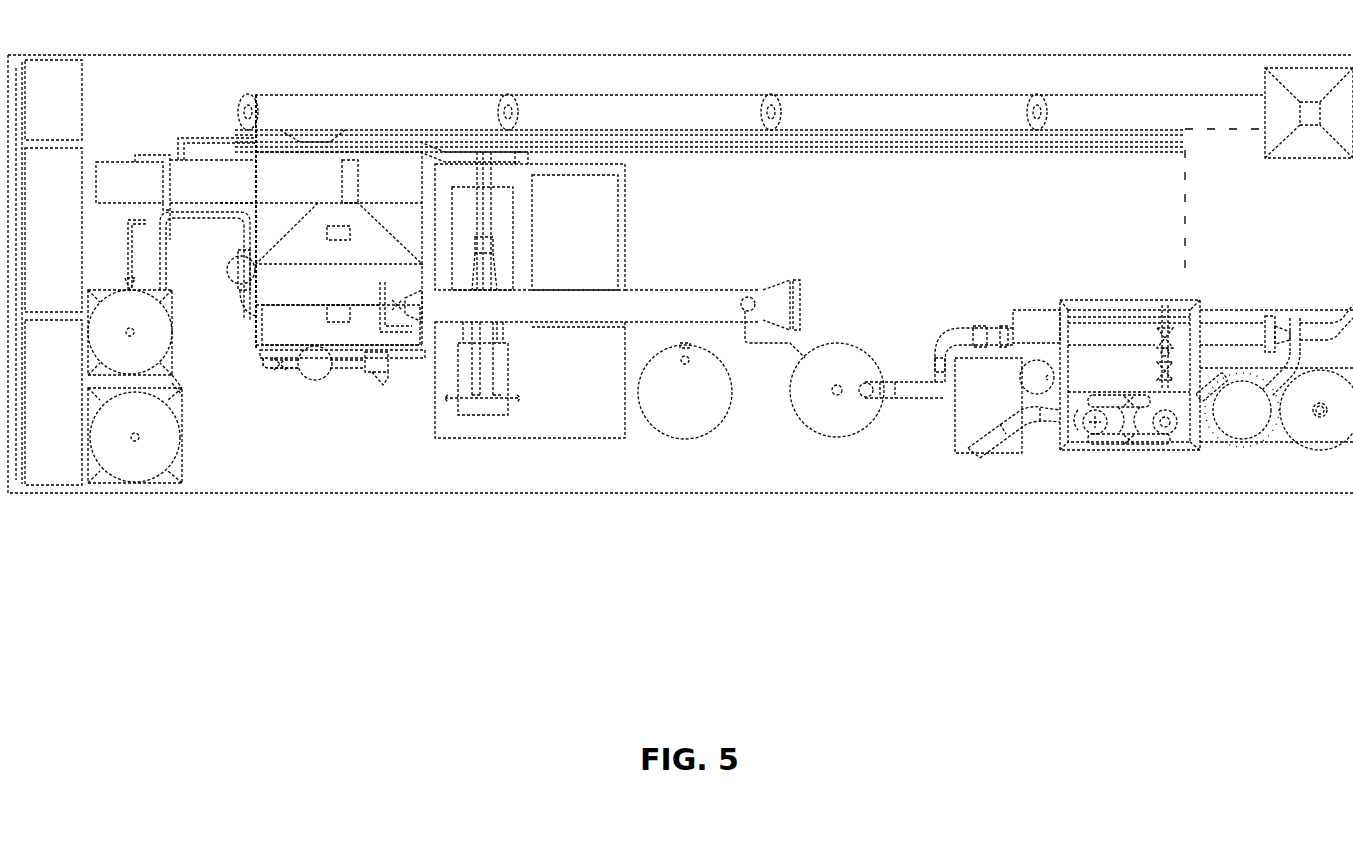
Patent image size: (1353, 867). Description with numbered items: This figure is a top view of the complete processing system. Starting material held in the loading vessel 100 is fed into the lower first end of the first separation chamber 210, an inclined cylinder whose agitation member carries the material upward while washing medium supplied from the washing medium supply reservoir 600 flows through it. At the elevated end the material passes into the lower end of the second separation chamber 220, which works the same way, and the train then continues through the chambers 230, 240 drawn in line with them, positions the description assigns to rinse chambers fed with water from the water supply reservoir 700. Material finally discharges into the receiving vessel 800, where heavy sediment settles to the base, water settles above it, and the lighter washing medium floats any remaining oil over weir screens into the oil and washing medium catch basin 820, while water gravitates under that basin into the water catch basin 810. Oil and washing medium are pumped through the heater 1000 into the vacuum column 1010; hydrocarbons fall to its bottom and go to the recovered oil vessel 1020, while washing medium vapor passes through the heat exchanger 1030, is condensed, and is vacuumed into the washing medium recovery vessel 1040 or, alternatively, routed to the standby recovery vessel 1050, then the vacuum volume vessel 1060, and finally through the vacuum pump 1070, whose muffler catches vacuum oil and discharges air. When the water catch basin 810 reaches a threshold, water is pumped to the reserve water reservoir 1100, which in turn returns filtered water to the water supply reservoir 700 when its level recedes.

The loading vessel 100 is at (1309, 113).
The first separation chamber 210 is at (1146, 187).
The second separation chamber 220 is at (905, 123).
The third conveyor section 230 is at (600, 129).
The fourth conveyor section 240 is at (377, 123).
The washing medium supply reservoir 600 is at (1316, 410).
The water supply reservoir 700 is at (130, 326).
The receiving vessel 800 is at (321, 222).
The water catch basin 810 is at (340, 345).
The oil and washing medium catch basin 820 is at (339, 305).
The heater 1000 is at (597, 295).
The vacuum column 1010 is at (882, 382).
The recovered oil vessel 1020 is at (721, 359).
The heat exchanger 1030 is at (1130, 375).
The washing medium recovery vessel 1040 is at (1274, 376).
The standby recovery vessel 1050 is at (1176, 443).
The vacuum volume vessel 1060 is at (1096, 448).
The vacuum pump 1070 is at (1007, 384).
The reserve water reservoir 1100 is at (135, 429).